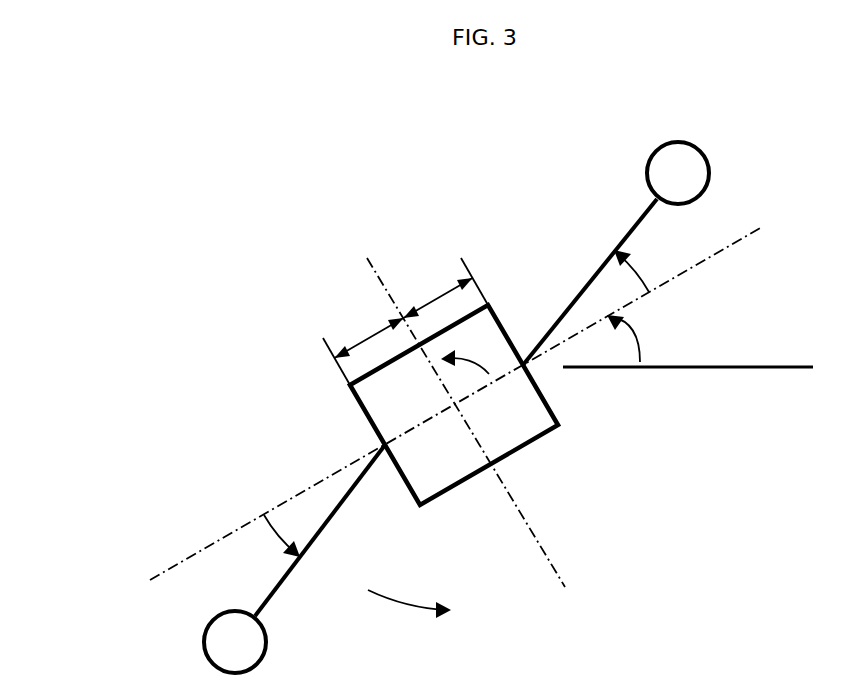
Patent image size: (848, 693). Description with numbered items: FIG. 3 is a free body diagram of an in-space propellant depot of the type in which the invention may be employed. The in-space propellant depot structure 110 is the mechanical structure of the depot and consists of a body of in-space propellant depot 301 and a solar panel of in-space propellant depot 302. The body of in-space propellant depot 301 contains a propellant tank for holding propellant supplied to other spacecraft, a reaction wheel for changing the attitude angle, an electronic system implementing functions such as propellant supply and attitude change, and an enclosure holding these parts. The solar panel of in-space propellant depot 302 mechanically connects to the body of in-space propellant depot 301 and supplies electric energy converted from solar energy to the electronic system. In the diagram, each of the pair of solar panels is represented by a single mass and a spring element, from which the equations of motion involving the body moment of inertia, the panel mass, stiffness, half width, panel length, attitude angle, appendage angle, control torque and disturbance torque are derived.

The in-space propellant depot structure 110 is at (160, 180).
The body of in-space propellant depot 301 is at (507, 455).
The solar panel of in-space propellant depot 302 is at (637, 221).